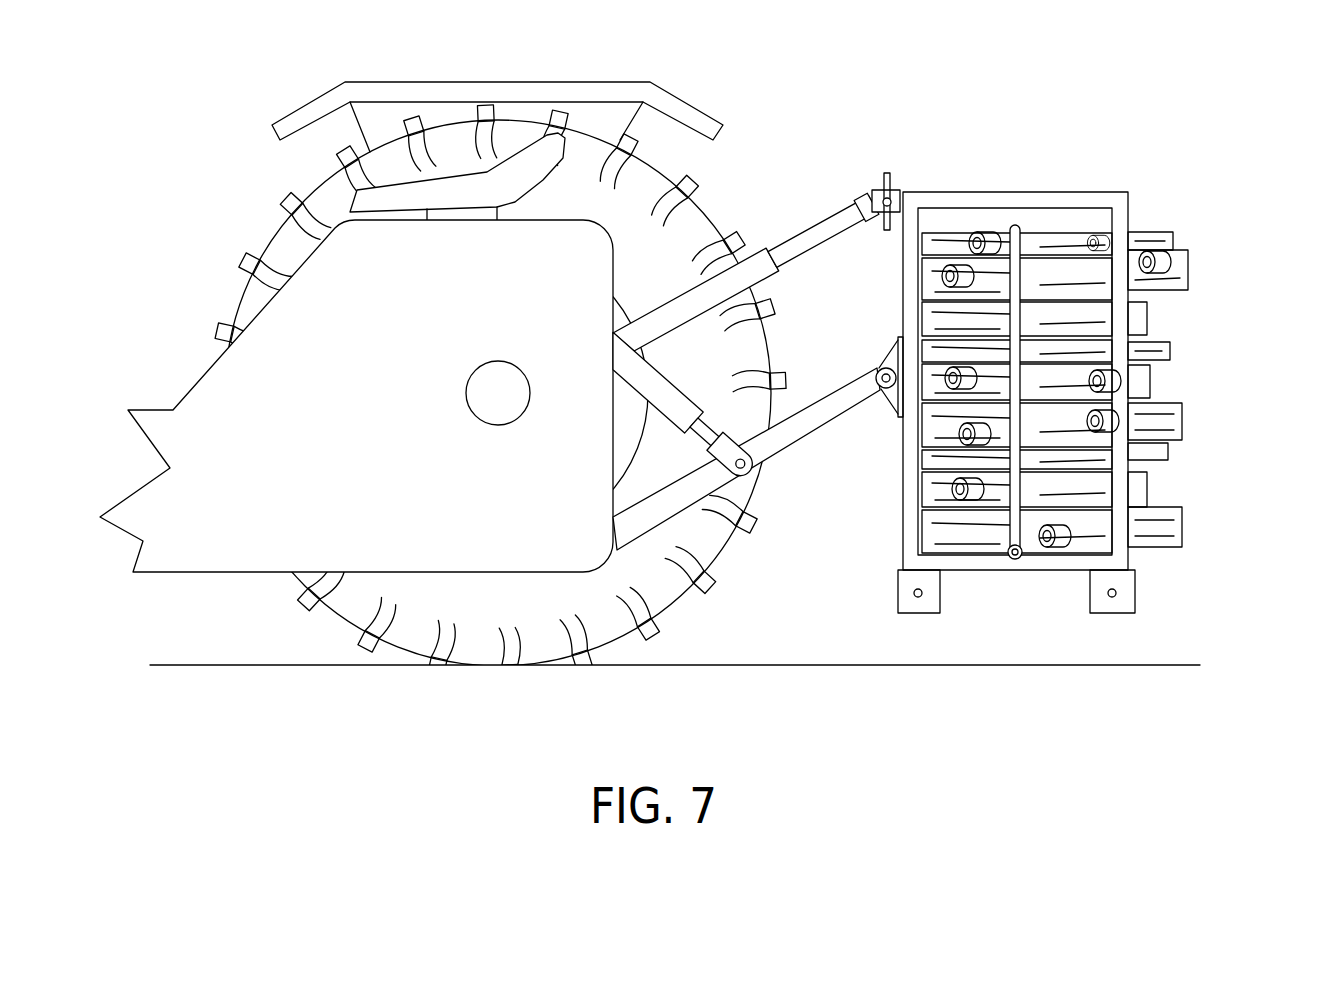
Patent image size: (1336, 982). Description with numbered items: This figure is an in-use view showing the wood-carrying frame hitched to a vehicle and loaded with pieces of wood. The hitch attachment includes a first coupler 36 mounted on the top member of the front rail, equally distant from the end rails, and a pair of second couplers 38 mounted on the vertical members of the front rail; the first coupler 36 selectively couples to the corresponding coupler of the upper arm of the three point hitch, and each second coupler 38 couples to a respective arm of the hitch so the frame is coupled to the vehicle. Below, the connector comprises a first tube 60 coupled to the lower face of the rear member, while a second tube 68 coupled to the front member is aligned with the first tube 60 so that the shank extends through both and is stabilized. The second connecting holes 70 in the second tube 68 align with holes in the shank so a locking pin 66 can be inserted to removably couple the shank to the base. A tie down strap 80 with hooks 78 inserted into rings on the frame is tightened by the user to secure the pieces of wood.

The first coupler 36 is at (900, 191).
The second coupler 38 is at (880, 388).
The first tube 60 is at (1020, 428).
The locking pin 66 is at (1108, 593).
The second tube 68 is at (900, 612).
The second connecting holes 70 is at (922, 593).
The hook 78 is at (1020, 547).
The tie down strap 80 is at (1015, 287).